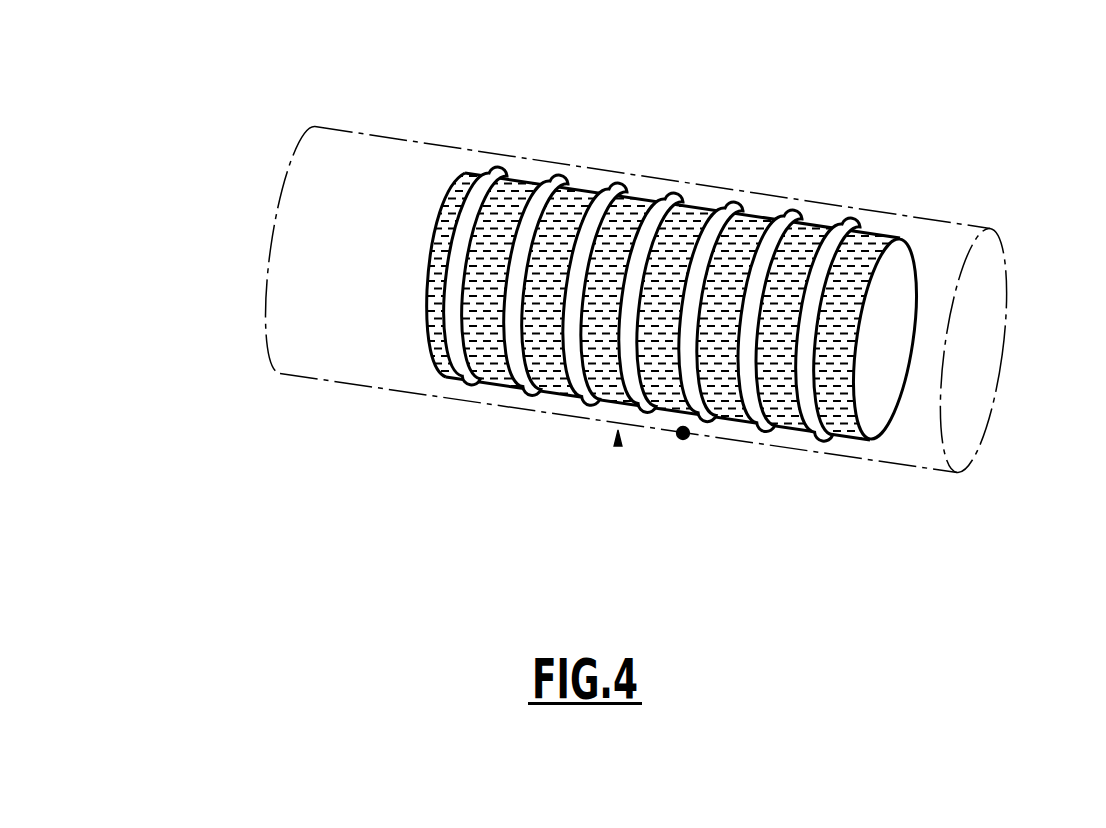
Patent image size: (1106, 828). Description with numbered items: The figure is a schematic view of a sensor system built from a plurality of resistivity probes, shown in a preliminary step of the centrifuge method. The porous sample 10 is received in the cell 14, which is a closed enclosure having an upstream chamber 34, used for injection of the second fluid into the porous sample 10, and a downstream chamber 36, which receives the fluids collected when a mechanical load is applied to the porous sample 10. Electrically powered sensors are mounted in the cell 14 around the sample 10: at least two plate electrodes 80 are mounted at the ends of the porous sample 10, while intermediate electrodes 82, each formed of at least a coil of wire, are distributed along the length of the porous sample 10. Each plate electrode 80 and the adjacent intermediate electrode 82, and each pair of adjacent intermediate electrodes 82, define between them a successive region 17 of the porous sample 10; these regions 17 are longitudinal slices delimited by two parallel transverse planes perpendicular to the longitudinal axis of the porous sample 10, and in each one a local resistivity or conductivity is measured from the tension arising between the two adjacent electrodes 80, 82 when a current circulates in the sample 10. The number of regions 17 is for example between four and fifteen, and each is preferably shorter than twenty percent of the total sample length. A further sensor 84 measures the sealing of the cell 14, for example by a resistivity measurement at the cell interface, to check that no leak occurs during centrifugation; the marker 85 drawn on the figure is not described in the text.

The porous sample 10 is at (870, 250).
The cell 14 is at (658, 237).
The successive region 17 is at (914, 246).
The upstream chamber 34 is at (988, 267).
The downstream chamber 36 is at (310, 183).
The plate electrode 80 is at (430, 277).
The intermediate electrode 82 is at (587, 410).
The further sensor 84 is at (683, 440).
The flow direction 85 is at (618, 446).